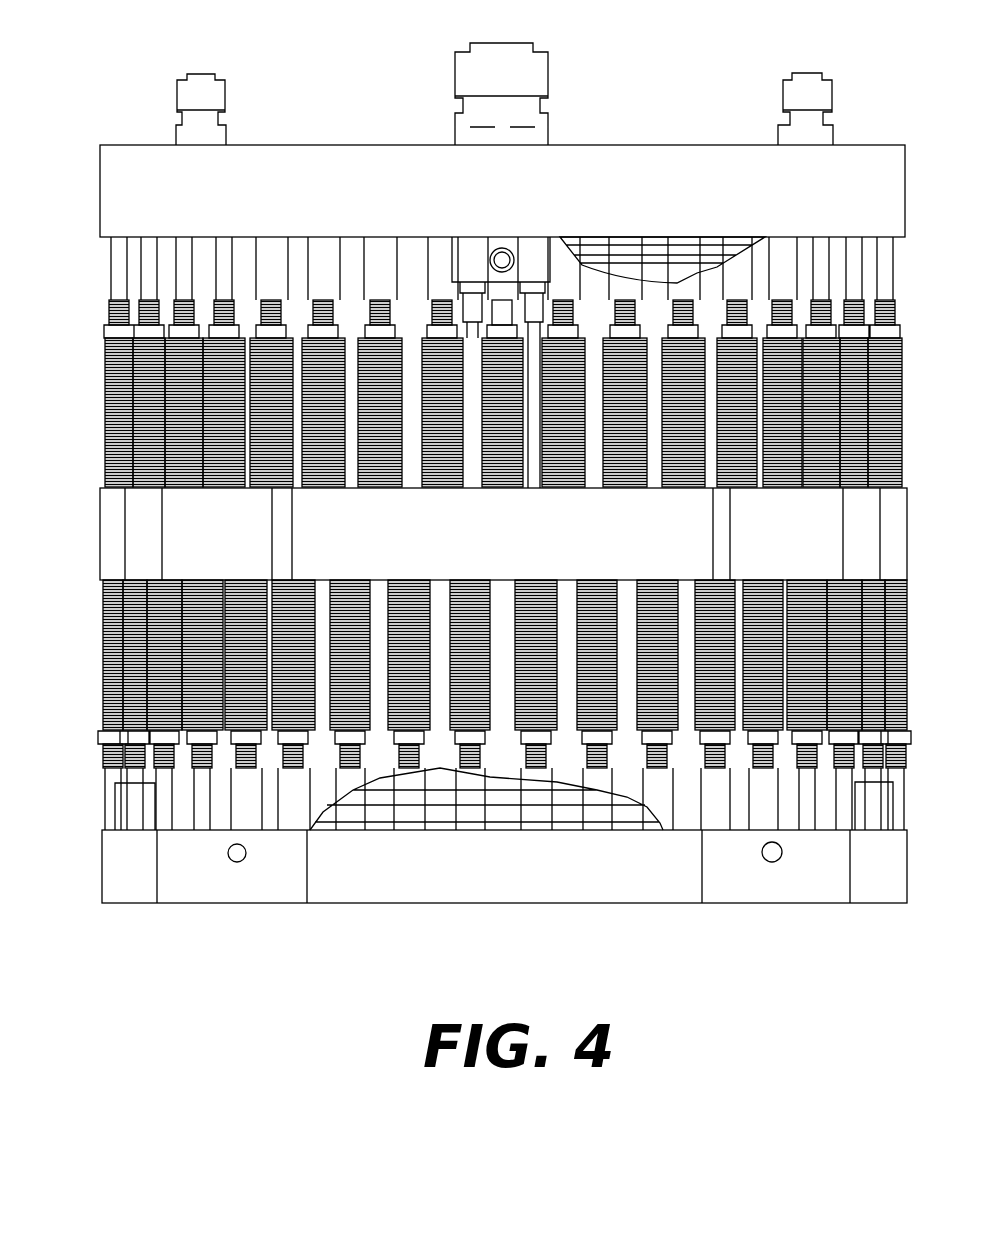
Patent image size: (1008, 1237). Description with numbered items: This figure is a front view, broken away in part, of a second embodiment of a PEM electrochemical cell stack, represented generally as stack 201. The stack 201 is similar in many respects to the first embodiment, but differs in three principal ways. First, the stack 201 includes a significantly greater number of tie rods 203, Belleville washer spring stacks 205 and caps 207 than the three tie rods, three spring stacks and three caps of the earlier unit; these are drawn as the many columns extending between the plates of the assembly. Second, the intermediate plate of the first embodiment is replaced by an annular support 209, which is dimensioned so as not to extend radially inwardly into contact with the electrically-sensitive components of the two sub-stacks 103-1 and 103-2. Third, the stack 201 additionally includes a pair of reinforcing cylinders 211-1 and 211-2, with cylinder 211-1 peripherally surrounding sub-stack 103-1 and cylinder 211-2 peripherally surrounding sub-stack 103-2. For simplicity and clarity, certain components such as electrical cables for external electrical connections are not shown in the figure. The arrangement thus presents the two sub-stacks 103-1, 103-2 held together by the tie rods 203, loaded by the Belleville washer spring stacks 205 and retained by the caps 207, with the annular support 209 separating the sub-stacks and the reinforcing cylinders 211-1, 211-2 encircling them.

The PEM electrochemical cell stack 201 is at (692, 96).
The tie rods 203 is at (265, 287).
The Belleville washer spring stacks 205 is at (402, 357).
The caps 207 is at (808, 330).
The annular support 209 is at (655, 534).
The reinforcing cylinder 211-1 is at (320, 263).
The reinforcing cylinder 211-2 is at (296, 808).
The sub-stack 103-1 is at (668, 263).
The sub-stack 103-2 is at (494, 808).